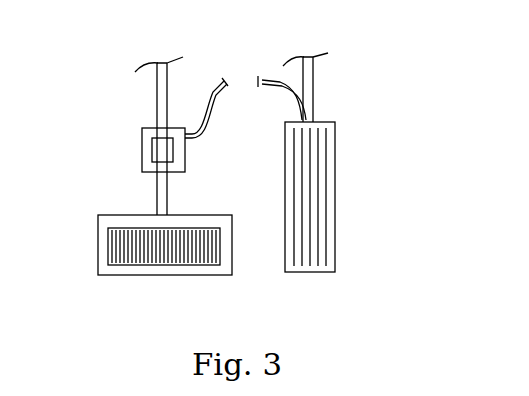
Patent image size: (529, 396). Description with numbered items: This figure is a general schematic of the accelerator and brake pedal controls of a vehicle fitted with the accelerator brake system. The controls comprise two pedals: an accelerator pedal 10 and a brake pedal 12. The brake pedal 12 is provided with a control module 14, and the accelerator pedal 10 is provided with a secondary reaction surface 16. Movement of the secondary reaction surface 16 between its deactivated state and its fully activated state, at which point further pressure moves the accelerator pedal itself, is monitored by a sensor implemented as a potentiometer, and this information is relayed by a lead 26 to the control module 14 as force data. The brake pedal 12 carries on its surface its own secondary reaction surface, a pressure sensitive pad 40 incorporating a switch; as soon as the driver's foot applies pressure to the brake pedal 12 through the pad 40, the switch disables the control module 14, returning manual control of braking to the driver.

The accelerator pedal 10 is at (430, 156).
The brake pedal 12 is at (80, 206).
The control module 14 is at (124, 142).
The secondary reaction surface 16 is at (328, 233).
The lead 26 is at (221, 80).
The pressure sensitive pad 40 is at (148, 268).